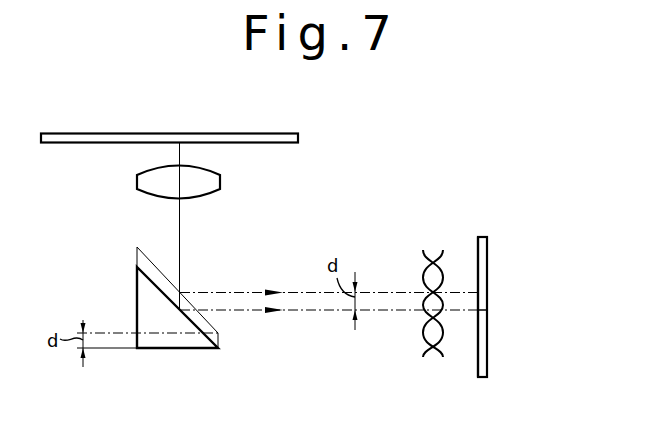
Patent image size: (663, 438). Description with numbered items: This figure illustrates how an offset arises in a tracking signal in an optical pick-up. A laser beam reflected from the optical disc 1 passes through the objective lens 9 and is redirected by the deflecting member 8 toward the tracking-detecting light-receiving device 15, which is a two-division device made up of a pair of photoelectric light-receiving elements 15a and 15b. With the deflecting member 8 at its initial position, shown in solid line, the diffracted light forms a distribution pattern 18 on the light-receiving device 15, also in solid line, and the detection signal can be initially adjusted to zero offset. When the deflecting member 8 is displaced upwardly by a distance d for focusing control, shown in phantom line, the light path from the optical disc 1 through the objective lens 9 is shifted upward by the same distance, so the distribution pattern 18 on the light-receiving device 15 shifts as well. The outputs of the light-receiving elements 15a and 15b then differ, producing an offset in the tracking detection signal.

The optical disc 1 is at (90, 133).
The objective lens 9 is at (140, 180).
The deflecting member 8 is at (176, 342).
The light-receiving device 15 is at (488, 304).
The light-receiving element 15a is at (488, 252).
The light-receiving element 15b is at (488, 352).
The distribution pattern of diffracted light 18 is at (424, 346).